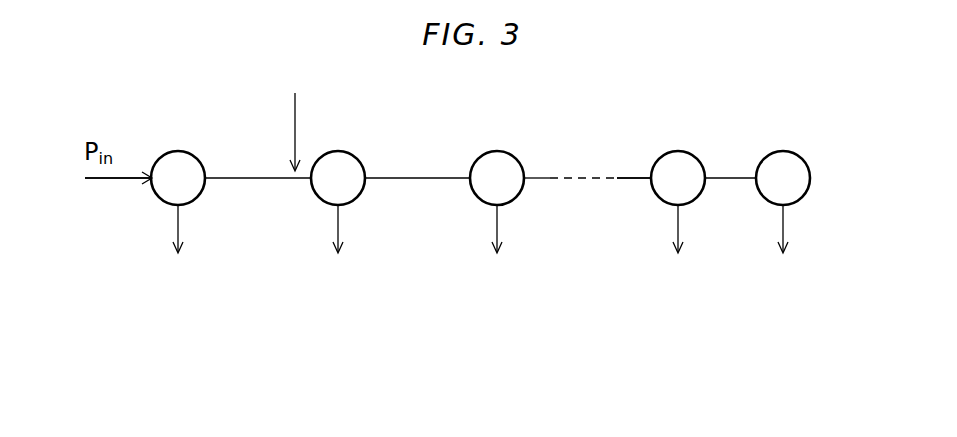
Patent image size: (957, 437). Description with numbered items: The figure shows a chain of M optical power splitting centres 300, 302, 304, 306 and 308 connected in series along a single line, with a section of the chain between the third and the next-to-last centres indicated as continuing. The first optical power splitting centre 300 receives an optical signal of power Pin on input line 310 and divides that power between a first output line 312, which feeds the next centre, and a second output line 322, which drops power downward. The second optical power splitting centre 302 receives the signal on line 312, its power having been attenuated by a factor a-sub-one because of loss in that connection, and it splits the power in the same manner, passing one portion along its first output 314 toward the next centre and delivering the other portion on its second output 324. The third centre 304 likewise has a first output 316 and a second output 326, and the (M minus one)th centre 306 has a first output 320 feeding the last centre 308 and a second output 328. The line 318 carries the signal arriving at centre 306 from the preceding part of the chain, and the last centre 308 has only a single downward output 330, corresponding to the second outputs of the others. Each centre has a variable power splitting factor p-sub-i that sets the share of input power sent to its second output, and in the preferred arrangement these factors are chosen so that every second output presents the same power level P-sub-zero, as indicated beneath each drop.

The first optical power splitting centre 300 is at (178, 150).
The second optical power splitting centre 302 is at (338, 150).
The third optical power splitting centre 304 is at (498, 150).
The (M-1)th optical power splitting centre 306 is at (680, 151).
The last (Mth) optical power splitting centre 308 is at (786, 151).
The input line 310 is at (121, 182).
The first output line of first splitting centre 312 is at (288, 182).
The first output of second splitting centre 314 is at (446, 182).
The first output of third splitting centre 316 is at (541, 178).
The link to (M-1)th node 318 is at (631, 181).
The first output of (M-1)th splitting centre 320 is at (731, 178).
The second output line of first splitting centre 322 is at (182, 228).
The second output of second splitting centre 324 is at (342, 228).
The second output of third splitting centre 326 is at (501, 228).
The second output of (M-1)th splitting centre 328 is at (682, 229).
The Mth output port 330 is at (787, 229).